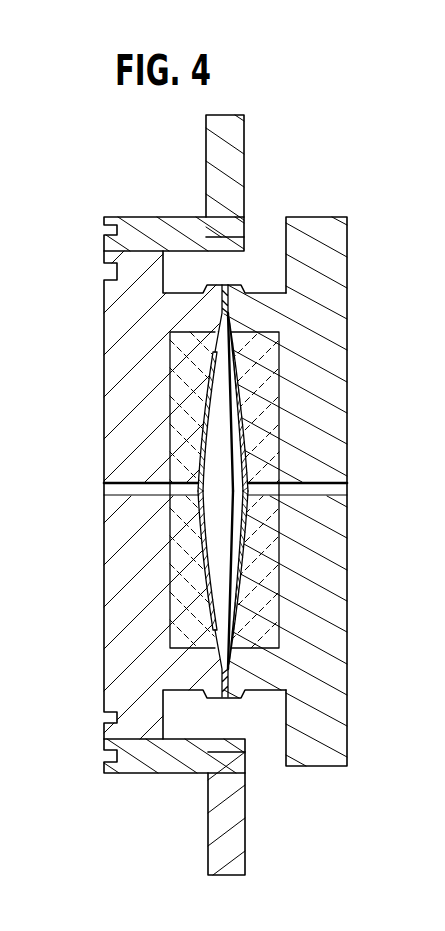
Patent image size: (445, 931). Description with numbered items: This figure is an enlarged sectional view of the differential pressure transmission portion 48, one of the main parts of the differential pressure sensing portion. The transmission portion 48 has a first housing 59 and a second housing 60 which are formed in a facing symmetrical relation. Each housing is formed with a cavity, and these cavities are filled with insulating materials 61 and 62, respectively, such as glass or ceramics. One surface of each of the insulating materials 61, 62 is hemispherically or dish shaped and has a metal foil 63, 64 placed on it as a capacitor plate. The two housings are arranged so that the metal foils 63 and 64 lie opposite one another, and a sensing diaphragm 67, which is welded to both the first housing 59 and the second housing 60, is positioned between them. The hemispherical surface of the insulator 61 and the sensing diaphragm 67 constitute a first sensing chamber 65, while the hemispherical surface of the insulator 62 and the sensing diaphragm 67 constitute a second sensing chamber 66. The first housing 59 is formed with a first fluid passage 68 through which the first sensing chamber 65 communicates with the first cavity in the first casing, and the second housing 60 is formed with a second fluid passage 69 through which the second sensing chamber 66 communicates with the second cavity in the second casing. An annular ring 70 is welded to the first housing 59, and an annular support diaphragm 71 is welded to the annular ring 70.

The differential pressure transmission portion 48 is at (226, 495).
The first housing 59 is at (105, 686).
The second housing 60 is at (347, 700).
The insulating material 61 is at (182, 600).
The insulating material 62 is at (262, 592).
The metal foil 63 is at (200, 395).
The metal foil 64 is at (243, 404).
The first sensing chamber 65 is at (203, 540).
The second sensing chamber 66 is at (250, 538).
The sensing diaphragm 67 is at (232, 418).
The first fluid passage 68 is at (117, 487).
The second fluid passage 69 is at (337, 484).
The annular ring 70 is at (177, 218).
The annular support diaphragm 71 is at (232, 177).